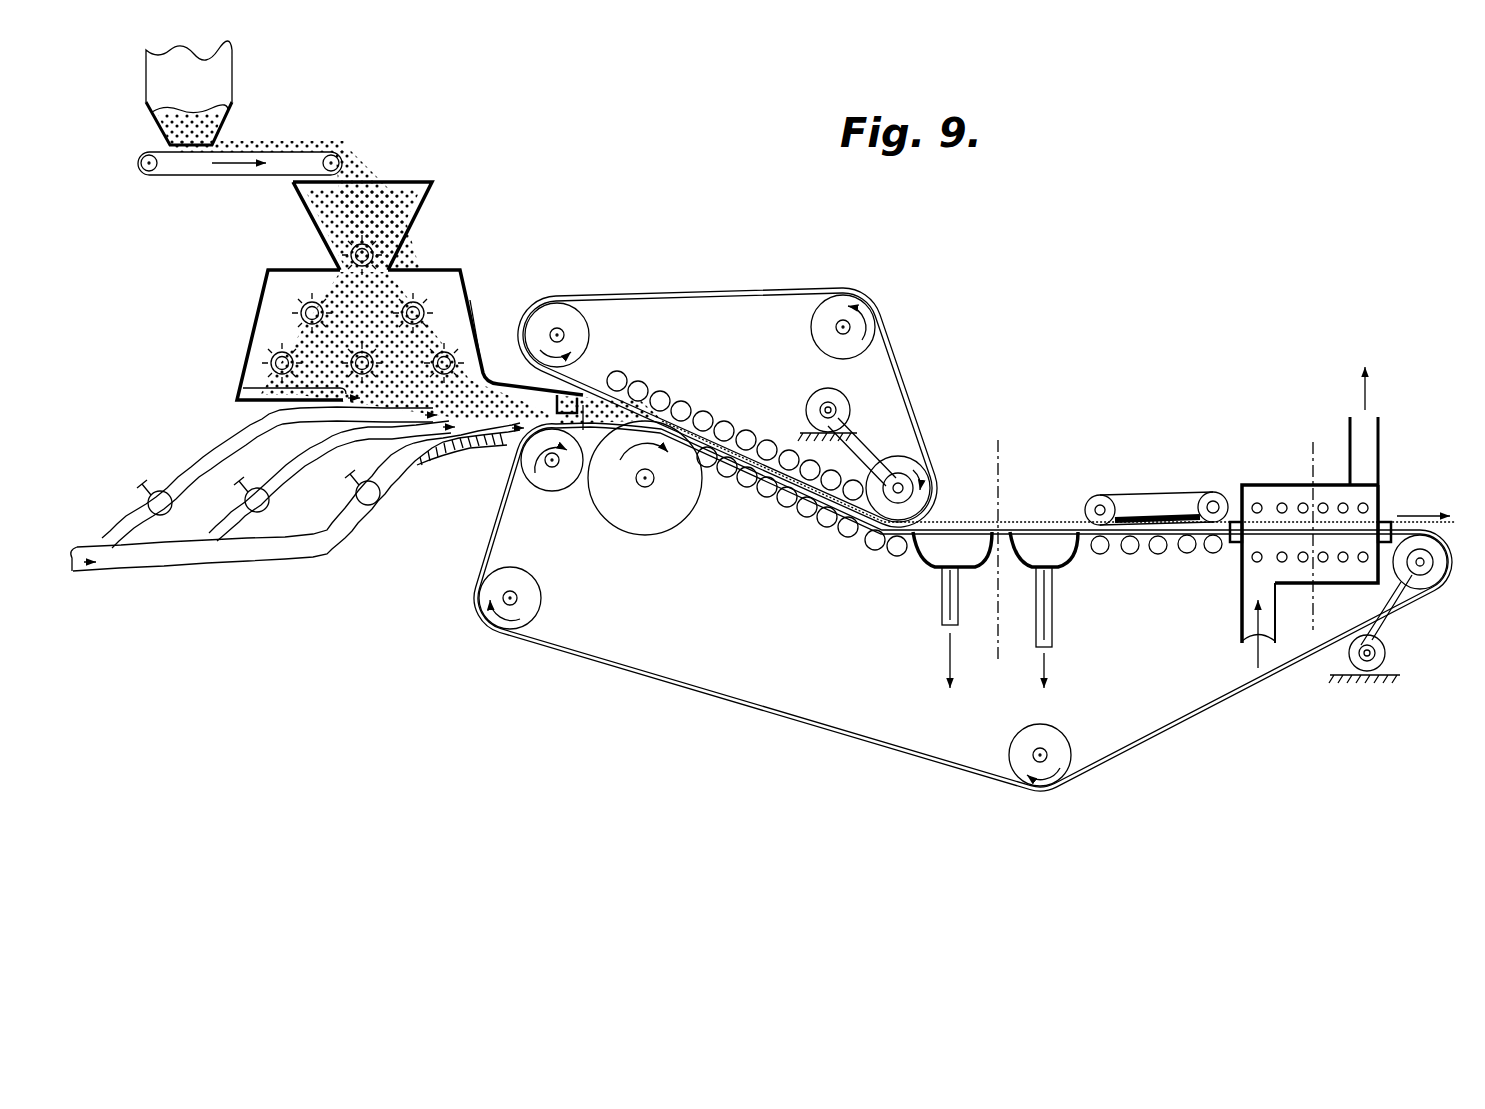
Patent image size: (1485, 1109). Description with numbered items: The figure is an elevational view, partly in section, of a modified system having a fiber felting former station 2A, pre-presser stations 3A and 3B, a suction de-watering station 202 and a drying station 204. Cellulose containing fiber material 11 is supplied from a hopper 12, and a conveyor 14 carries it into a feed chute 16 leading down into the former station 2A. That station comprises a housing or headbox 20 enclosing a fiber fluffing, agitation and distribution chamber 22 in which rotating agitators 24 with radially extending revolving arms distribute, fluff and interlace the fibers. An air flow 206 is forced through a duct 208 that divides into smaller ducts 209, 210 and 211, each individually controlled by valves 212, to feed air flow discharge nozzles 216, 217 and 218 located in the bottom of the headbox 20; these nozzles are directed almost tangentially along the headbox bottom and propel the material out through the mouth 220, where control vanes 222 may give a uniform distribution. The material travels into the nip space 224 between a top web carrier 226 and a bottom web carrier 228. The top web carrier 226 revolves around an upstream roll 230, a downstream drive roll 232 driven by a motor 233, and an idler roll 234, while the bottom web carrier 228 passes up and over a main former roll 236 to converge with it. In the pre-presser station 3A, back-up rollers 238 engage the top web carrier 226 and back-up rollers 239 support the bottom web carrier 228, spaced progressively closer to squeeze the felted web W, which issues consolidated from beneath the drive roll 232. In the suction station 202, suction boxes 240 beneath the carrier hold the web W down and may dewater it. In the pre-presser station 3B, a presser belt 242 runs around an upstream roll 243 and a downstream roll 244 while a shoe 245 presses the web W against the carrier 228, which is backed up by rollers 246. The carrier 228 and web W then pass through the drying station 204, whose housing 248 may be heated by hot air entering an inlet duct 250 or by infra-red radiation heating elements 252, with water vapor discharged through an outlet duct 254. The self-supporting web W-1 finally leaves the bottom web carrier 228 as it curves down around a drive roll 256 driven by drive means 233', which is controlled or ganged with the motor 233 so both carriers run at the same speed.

The hopper 12 is at (218, 80).
The cellulose containing fiber material 11 is at (222, 127).
The conveyor 14 is at (198, 177).
The feed chute 16 is at (428, 210).
The housing or headbox 20 is at (252, 327).
The fiber fluffing, agitation and distribution chamber 22 is at (440, 293).
The rotating agitators 24 is at (310, 300).
The fiber felting former station 2A is at (246, 296).
The air flow discharge nozzle 216 is at (300, 386).
The air flow discharge nozzle 217 is at (493, 360).
The mouth 220 is at (553, 400).
The smaller duct 209 is at (247, 430).
The smaller duct 210 is at (307, 450).
The smaller duct 211 is at (400, 457).
The duct 208 is at (232, 567).
The air flow 206 is at (70, 575).
The valves 212 is at (245, 500).
The air flow discharge nozzle 218 is at (502, 450).
The top web carrier 226 is at (745, 297).
The upstream roll 230 is at (568, 303).
The idler roll 234 is at (850, 300).
The downstream drive roll 232 is at (912, 460).
The motor 233 is at (832, 410).
The nip space 224 is at (657, 398).
The back-up rollers 238 is at (728, 421).
The back-up rollers 239 is at (877, 552).
The main former roll 236 is at (641, 522).
The control vanes 222 is at (585, 428).
The pre-presser station 3A is at (769, 515).
The bottom web carrier 228 is at (657, 677).
The felted web W is at (952, 518).
The web W-1 is at (1428, 507).
The suction boxes 240 is at (927, 572).
The suction de-watering station 202 is at (1019, 502).
The rollers 246 is at (1187, 553).
The presser belt 242 is at (1113, 483).
The upstream roll 243 is at (1083, 505).
The downstream roll 244 is at (1220, 492).
The shoe 245 is at (1142, 515).
The pre-presser station 3B is at (1190, 478).
The housing 248 is at (1275, 470).
The infra-red radiation heating elements 252 is at (1366, 505).
The inlet duct 250 is at (1240, 602).
The outlet duct 254 is at (1382, 430).
The drying station 204 is at (1306, 398).
The drive roll 256 is at (1433, 594).
The drive means 233' is at (1391, 643).